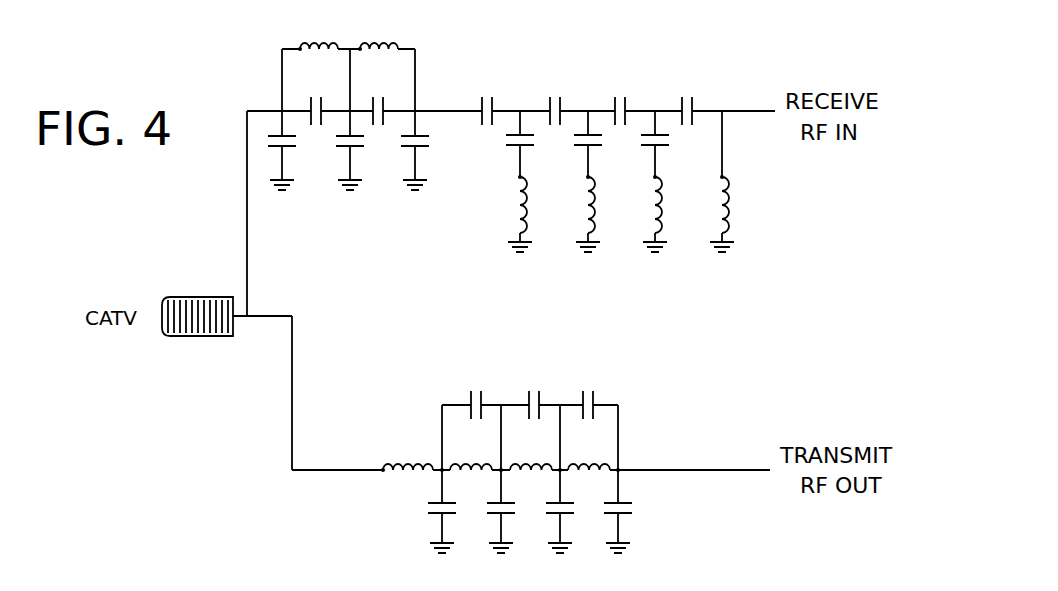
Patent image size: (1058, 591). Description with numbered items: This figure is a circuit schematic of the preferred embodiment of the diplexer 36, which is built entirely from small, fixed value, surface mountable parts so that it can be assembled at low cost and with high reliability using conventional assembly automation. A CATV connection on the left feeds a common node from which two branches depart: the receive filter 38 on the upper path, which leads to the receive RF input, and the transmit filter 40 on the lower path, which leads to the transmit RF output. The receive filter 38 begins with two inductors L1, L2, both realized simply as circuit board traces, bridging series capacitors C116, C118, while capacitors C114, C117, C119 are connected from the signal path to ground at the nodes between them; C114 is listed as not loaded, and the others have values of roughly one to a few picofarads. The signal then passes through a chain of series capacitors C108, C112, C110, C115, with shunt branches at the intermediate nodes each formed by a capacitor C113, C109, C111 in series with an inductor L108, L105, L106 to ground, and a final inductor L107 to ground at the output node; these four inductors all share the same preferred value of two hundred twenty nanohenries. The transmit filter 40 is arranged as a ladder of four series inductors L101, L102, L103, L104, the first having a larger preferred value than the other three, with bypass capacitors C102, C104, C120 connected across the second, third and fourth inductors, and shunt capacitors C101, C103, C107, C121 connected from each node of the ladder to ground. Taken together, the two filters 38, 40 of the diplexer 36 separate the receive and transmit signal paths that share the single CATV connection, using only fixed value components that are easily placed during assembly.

The diplexer 36 is at (698, 367).
The receive filter 38 is at (470, 282).
The transmit filter 40 is at (257, 412).
The inductor L1 is at (319, 28).
The inductor L2 is at (379, 28).
The capacitor C116 is at (316, 97).
The capacitor C118 is at (382, 97).
The capacitor C114 is at (292, 158).
The capacitor C117 is at (360, 158).
The capacitor C119 is at (426, 158).
The capacitor C108 is at (498, 81).
The capacitor C112 is at (570, 81).
The capacitor C110 is at (633, 81).
The capacitor C115 is at (700, 81).
The capacitor C113 is at (544, 149).
The capacitor C109 is at (611, 149).
The capacitor C111 is at (677, 149).
The inductor L108 is at (532, 213).
The inductor L105 is at (600, 213).
The inductor L106 is at (667, 213).
The inductor L107 is at (734, 181).
The inductor L101 is at (408, 452).
The inductor L102 is at (470, 452).
The inductor L103 is at (530, 452).
The inductor L104 is at (588, 452).
The capacitor C102 is at (480, 379).
The capacitor C104 is at (543, 379).
The capacitor C120 is at (597, 379).
The capacitor C101 is at (451, 521).
The capacitor C103 is at (510, 520).
The capacitor C107 is at (569, 520).
The capacitor C121 is at (628, 520).